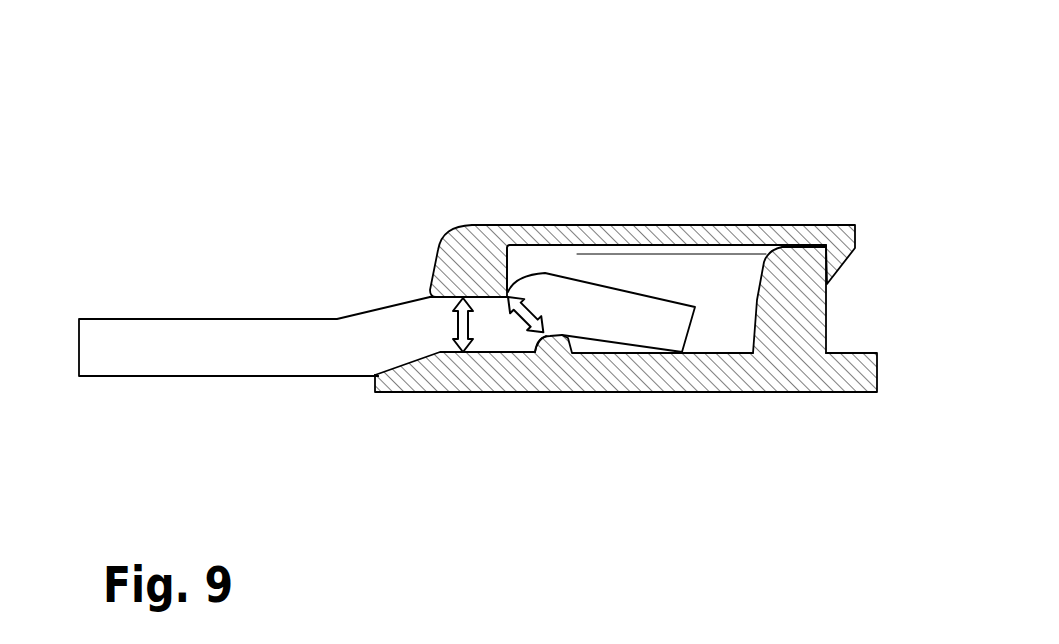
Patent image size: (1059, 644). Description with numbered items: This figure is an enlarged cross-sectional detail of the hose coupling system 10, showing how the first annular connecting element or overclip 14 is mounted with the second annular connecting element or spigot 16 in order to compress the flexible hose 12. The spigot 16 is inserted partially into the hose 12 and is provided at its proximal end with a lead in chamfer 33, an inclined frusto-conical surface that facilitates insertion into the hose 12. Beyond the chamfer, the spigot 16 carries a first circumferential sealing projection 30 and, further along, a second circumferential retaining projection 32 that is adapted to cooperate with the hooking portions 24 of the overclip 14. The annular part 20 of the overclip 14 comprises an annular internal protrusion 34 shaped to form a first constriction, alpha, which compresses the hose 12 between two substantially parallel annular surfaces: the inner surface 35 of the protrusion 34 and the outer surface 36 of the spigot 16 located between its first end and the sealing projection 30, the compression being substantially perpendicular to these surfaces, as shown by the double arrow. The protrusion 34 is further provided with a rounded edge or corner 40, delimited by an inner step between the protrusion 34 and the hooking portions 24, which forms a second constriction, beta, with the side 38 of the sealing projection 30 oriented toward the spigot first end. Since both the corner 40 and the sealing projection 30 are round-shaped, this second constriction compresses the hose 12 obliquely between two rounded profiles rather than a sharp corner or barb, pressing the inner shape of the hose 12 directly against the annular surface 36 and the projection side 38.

The system 10 is at (222, 242).
The flexible hose 12 is at (248, 330).
The first annular connecting element (overclip) 14 is at (717, 164).
The second annular connecting element (spigot) 16 is at (639, 438).
The annular part 20 is at (450, 216).
The hooking portions 24 is at (607, 226).
The first circumferential sealing projection 30 is at (555, 342).
The second circumferential retaining projection 32 is at (785, 332).
The lead in chamfer 33 is at (377, 376).
The annular internal protrusion 34 is at (487, 250).
The inner surface of the protrusion 35 is at (430, 297).
The outer surface of the spigot 36 is at (468, 355).
The side of the sealing projection 38 is at (535, 350).
The rounded edge (corner) 40 is at (508, 292).